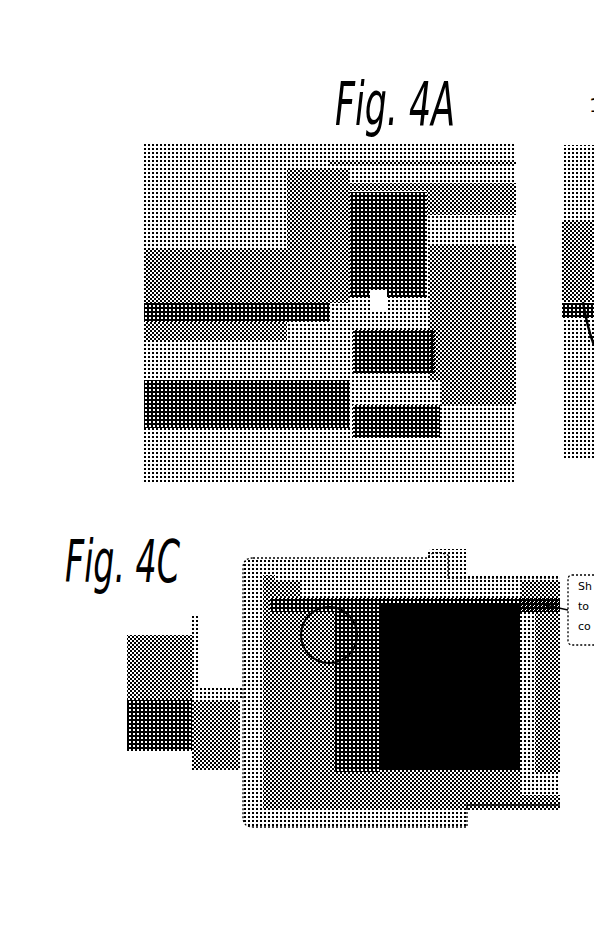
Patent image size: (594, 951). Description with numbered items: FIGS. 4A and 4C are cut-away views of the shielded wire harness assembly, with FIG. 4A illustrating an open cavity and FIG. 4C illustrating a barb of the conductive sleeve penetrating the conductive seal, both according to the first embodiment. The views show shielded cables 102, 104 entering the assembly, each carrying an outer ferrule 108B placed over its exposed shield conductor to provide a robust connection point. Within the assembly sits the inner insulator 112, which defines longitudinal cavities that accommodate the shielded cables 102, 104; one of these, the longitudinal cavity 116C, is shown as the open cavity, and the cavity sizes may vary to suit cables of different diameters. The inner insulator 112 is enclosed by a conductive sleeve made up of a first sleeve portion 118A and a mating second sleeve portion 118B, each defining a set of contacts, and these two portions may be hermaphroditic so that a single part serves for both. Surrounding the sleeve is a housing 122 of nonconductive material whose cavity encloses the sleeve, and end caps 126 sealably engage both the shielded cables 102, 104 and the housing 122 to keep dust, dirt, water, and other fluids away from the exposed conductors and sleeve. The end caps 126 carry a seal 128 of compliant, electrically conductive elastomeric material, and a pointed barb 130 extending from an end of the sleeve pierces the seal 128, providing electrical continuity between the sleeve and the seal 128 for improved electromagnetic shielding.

In FIG. 4A, the shielded cable 102 is at (165, 380).
In FIG. 4A, the shielded cable 104 is at (178, 302).
In FIG. 4A, the outer ferrule 108B is at (350, 278).
In FIG. 4A, the inner insulator 112 is at (455, 360).
In FIG. 4A, the longitudinal cavity 116C is at (507, 230).
In FIG. 4A, the first sleeve portion 118A is at (481, 172).
In FIG. 4C, the first sleeve portion 118A is at (522, 612).
In FIG. 4C, the second sleeve portion 118B is at (402, 783).
In FIG. 4C, the housing 122 is at (525, 797).
In FIG. 4C, the end cap 126 is at (212, 757).
In FIG. 4A, the seal 128 is at (297, 212).
In FIG. 4C, the seal 128 is at (293, 737).
In FIG. 4C, the pointed barb 130 is at (330, 635).